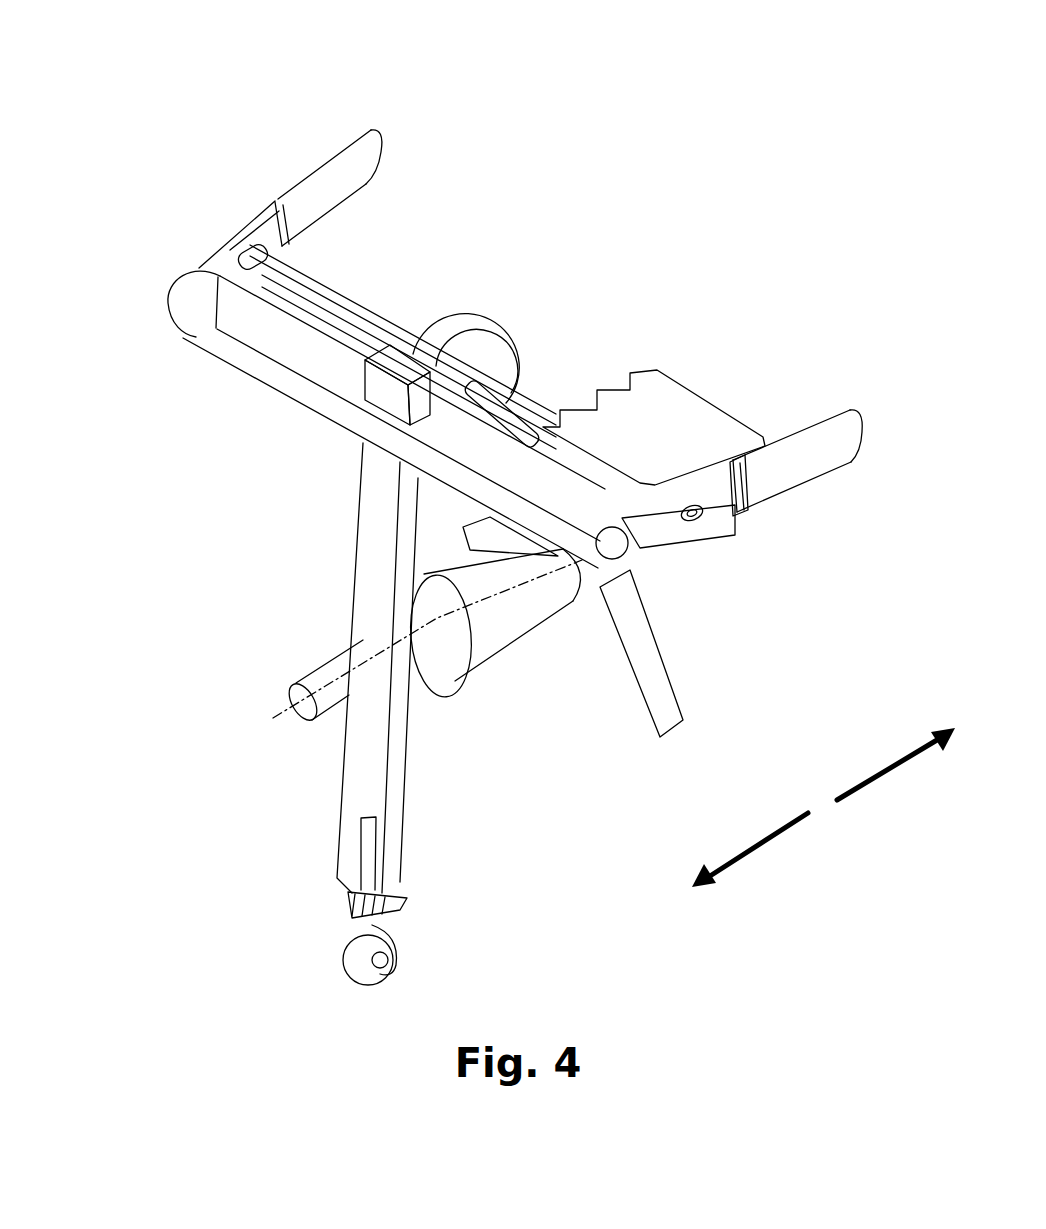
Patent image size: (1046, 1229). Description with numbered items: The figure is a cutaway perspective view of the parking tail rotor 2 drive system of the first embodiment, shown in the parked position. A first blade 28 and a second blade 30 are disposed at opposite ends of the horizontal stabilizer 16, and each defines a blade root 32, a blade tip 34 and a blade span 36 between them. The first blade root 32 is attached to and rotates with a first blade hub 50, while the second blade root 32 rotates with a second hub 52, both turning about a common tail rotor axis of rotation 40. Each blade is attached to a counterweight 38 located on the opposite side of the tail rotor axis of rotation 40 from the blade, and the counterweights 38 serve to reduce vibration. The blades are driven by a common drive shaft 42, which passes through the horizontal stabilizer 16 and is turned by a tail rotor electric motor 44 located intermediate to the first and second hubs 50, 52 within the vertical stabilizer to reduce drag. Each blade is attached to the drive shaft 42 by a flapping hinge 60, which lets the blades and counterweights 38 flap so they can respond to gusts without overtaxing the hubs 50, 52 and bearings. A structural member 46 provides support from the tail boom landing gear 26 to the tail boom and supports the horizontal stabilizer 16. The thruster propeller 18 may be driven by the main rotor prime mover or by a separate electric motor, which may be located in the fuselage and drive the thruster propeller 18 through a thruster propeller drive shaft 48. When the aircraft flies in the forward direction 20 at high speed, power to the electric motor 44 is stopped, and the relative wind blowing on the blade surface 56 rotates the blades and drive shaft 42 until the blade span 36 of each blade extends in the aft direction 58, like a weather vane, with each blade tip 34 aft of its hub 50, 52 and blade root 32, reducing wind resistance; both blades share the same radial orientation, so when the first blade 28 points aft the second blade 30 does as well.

The parking tail rotor 2 is at (684, 115).
The horizontal stabilizer 16 is at (618, 415).
The thruster propeller 18 is at (627, 683).
The forward direction 20 is at (760, 847).
The tail boom landing gear 26 is at (357, 920).
The first blade 28 is at (823, 468).
The second blade 30 is at (295, 183).
The blade root 32 is at (267, 203).
The blade tip 34 is at (380, 153).
The blade span 36 is at (330, 183).
The counterweight 38 is at (173, 287).
The tail rotor axis of rotation 40 is at (305, 283).
The drive shaft 42 is at (363, 308).
The tail rotor electric motor 44 is at (465, 325).
The structural member 46 is at (375, 505).
The thruster propeller drive shaft 48 is at (325, 668).
The first blade hub 50 is at (692, 521).
The second hub 52 is at (217, 247).
The blade surface 56 is at (767, 480).
The aft direction 58 is at (887, 772).
The flapping hinge 60 is at (700, 517).